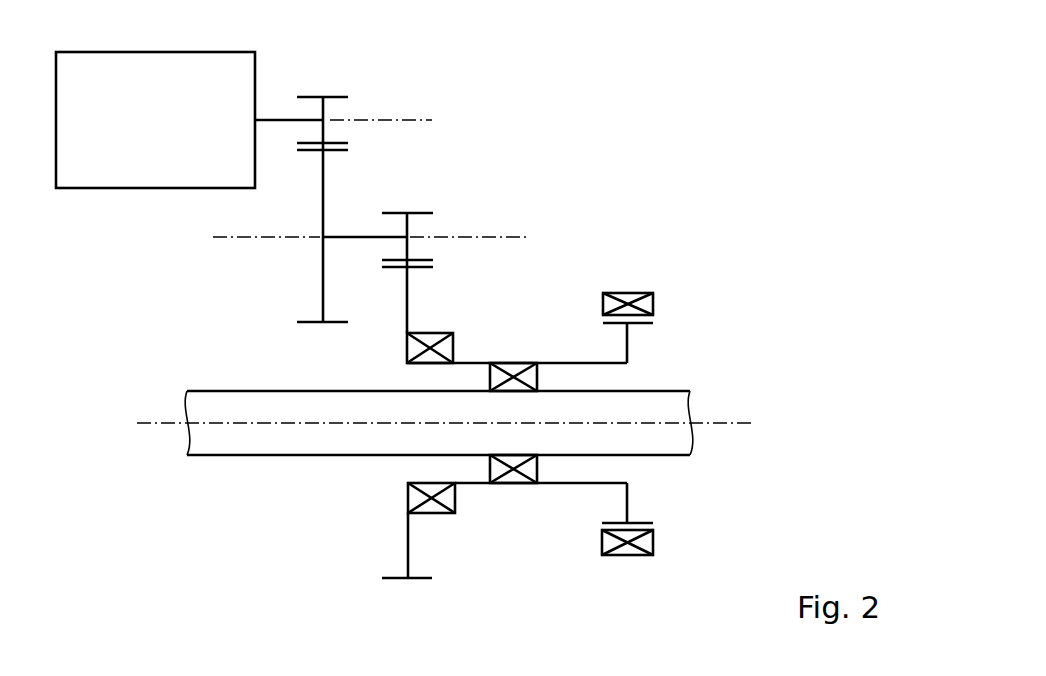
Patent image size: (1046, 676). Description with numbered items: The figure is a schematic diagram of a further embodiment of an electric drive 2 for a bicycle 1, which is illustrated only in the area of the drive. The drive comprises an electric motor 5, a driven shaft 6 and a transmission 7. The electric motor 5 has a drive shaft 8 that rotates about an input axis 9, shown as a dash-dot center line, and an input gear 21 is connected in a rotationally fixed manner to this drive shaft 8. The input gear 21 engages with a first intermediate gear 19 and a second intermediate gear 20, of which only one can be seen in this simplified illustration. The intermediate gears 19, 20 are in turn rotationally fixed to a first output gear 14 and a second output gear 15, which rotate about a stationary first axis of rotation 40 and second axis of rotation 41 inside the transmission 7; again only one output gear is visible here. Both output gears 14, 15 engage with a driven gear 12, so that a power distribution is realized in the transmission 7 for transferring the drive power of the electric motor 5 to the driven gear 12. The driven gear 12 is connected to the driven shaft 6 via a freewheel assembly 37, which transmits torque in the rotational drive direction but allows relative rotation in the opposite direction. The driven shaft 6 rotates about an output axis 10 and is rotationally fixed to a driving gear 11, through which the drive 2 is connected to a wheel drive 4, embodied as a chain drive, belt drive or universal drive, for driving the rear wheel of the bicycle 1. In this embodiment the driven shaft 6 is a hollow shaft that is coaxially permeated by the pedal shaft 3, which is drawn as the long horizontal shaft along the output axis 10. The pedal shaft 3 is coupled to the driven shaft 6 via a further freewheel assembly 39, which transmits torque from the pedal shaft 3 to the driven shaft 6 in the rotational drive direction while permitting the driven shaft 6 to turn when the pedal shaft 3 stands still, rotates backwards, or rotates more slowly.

The bicycle 1 is at (742, 152).
The electric drive 2 is at (665, 165).
The pedal shaft 3 is at (243, 462).
The wheel drive 4 is at (668, 541).
The electric motor 5 is at (155, 120).
The driven shaft 6 is at (557, 362).
The transmission 7 is at (293, 191).
The drive shaft 8 is at (283, 117).
The input axis 9 is at (432, 116).
The output axis 10 is at (732, 422).
The driving gear 11 is at (627, 345).
The driven gear 12 is at (452, 255).
The first output gear 14 is at (452, 200).
The second output gear 15 is at (408, 223).
The first intermediate gear 19 is at (365, 165).
The second intermediate gear 20 is at (323, 177).
The input gear 21 is at (323, 108).
The freewheel assembly 37 is at (418, 498).
The further freewheel assembly 39 is at (512, 484).
The first axis of rotation 40 is at (410, 202).
The second axis of rotation 41 is at (520, 237).